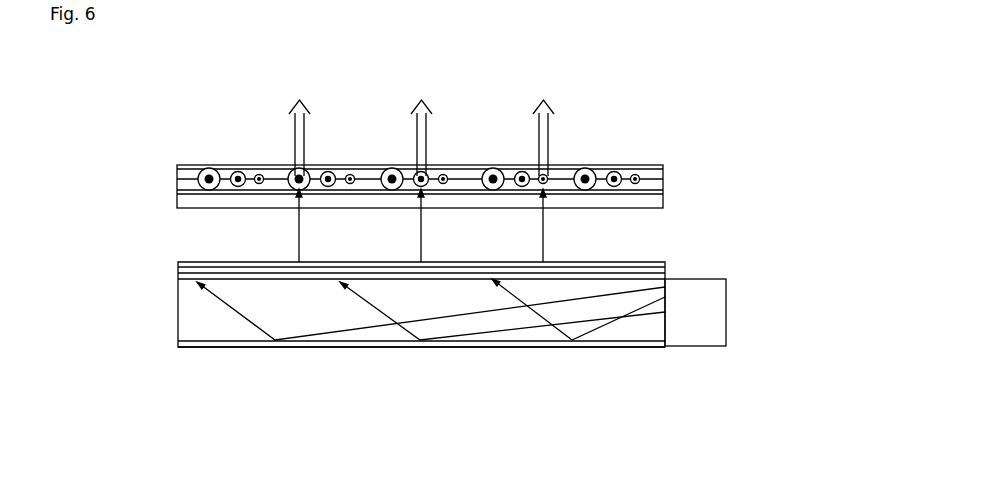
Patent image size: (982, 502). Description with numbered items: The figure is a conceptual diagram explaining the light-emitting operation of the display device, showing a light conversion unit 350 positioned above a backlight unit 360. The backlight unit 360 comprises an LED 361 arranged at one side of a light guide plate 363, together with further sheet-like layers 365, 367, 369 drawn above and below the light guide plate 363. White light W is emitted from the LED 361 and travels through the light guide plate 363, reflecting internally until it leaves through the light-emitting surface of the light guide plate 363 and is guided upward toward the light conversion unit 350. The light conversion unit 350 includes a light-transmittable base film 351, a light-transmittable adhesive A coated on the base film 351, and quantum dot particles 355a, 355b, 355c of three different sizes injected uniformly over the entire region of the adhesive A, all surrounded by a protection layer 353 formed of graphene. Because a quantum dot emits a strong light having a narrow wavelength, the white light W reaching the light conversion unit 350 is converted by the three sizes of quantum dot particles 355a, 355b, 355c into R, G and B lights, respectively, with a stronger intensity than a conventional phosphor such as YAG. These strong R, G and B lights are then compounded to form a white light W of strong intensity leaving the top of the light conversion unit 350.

The light conversion unit 350 is at (480, 153).
The base film 351 is at (663, 197).
The protection layer 353 is at (663, 170).
The light-transmittable adhesive A is at (663, 185).
The quantum dot particle 355a is at (209, 167).
The quantum dot particle 355b is at (238, 171).
The quantum dot particle 355c is at (350, 174).
The R light R is at (299, 127).
The G light G is at (421, 127).
The B light B is at (543, 127).
The white light W is at (300, 236).
The backlight unit 360 is at (458, 316).
The LED 361 is at (712, 315).
The light guide plate 363 is at (186, 315).
The reflective sheet 365 is at (411, 347).
The optical sheet 367 is at (180, 279).
The diffusion sheet 369 is at (186, 262).